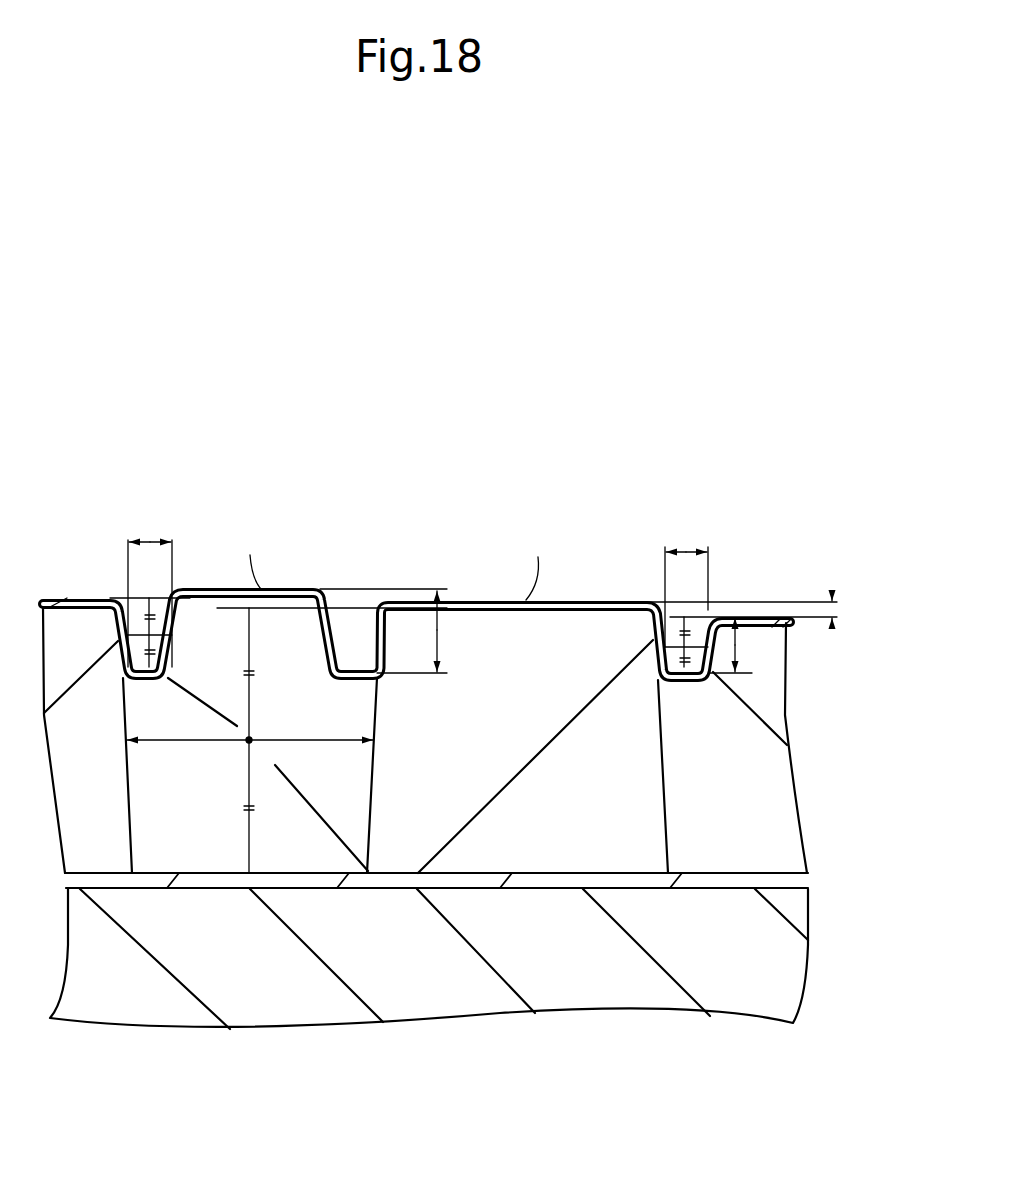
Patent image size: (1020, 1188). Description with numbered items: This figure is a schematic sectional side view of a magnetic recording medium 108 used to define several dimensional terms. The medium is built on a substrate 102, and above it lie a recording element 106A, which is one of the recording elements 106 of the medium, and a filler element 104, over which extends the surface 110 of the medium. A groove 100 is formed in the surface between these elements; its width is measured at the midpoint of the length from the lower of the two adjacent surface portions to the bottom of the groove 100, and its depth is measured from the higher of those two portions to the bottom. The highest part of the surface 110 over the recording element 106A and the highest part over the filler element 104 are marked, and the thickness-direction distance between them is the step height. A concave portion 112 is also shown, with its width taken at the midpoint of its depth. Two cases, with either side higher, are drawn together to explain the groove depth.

The groove 100 is at (138, 627).
The substrate 102 is at (808, 960).
The filler element 104 is at (277, 620).
The thin metal film layer 106 is at (803, 755).
The recording element 106A is at (75, 623).
The magnetic recording medium 108 is at (516, 440).
The surface 110 is at (585, 602).
The concave portion 112 is at (235, 628).